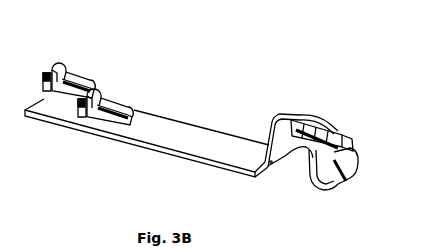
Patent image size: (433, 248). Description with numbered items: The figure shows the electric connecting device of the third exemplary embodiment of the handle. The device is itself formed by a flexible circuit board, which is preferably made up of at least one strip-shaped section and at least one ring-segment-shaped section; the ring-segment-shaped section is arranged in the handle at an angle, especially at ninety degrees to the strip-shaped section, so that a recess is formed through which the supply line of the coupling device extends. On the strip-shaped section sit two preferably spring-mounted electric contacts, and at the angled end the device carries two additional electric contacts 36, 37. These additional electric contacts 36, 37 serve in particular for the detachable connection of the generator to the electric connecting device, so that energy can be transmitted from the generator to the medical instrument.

The additional electric contact 36 is at (323, 125).
The additional electric contact 37 is at (351, 171).